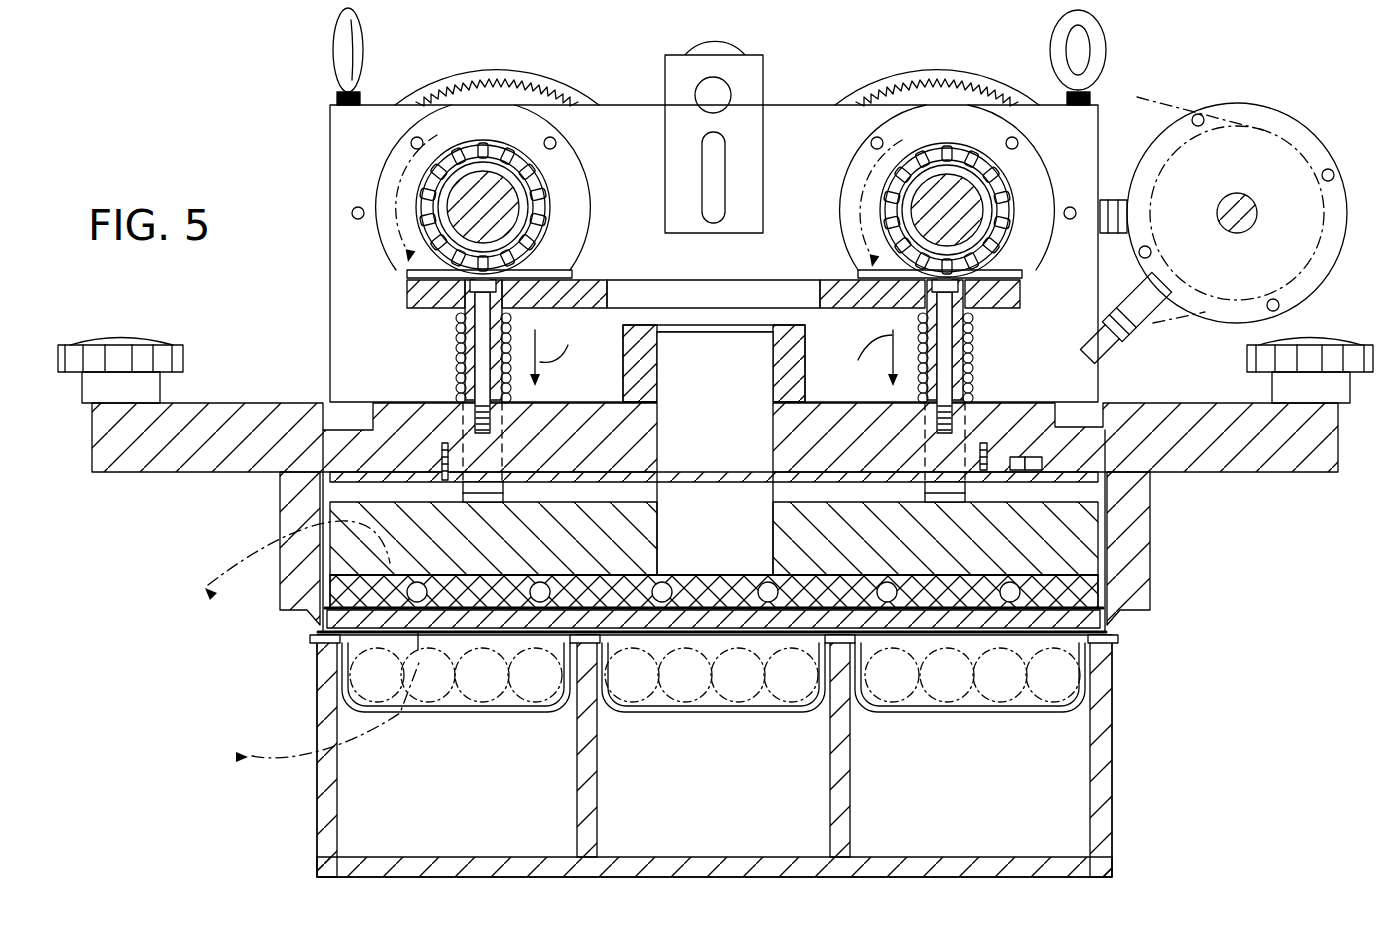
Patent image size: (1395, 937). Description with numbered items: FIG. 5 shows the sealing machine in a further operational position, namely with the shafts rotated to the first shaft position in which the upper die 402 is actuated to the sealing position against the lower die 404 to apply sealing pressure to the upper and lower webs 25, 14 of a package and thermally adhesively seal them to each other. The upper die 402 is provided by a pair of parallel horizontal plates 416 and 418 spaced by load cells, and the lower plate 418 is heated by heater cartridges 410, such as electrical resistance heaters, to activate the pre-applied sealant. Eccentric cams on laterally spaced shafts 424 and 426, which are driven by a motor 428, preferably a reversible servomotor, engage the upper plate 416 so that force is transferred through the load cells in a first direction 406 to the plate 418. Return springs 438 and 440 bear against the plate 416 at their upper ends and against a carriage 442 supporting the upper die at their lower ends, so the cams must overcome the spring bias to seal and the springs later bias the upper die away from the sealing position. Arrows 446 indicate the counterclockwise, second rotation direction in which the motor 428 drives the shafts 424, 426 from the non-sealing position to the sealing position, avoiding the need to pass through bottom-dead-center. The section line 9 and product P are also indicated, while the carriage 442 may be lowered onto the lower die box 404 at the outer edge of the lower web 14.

The section line 9 is at (303, 642).
The lower web 14 is at (1117, 638).
The upper web 25 is at (1093, 626).
The product P is at (1053, 677).
The upper die 402 is at (330, 518).
The lower die 404 is at (322, 700).
The first direction 406 is at (714, 355).
The heater cartridges 410 is at (1010, 600).
The plate 416 is at (1017, 293).
The plate 418 is at (1100, 535).
The shaft 424 is at (495, 203).
The shaft 426 is at (937, 227).
The motor 428 is at (1220, 103).
The return spring 438 is at (462, 388).
The return spring 440 is at (967, 385).
The carriage 442 is at (1338, 437).
The second opposite rotation direction 446 is at (405, 190).